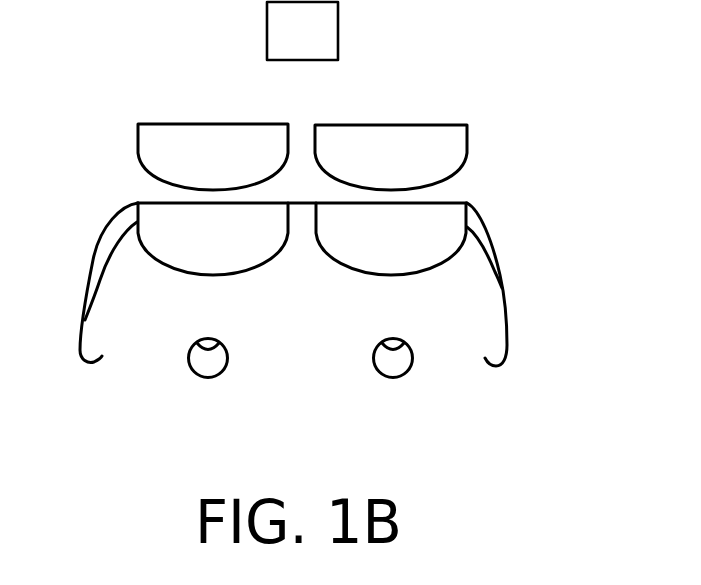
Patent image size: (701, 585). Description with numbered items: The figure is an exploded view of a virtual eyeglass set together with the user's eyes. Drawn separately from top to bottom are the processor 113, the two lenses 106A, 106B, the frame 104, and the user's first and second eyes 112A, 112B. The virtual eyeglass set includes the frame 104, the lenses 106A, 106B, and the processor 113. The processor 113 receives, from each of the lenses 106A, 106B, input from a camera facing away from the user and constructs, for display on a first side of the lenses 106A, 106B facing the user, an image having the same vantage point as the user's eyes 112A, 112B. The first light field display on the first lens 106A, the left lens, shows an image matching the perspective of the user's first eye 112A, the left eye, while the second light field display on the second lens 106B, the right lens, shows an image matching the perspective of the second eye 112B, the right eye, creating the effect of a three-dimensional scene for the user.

The processor 113 is at (338, 20).
The first lens 106A is at (137, 150).
The second lens 106B is at (467, 143).
The frame 104 is at (503, 283).
The first eye 112A is at (227, 365).
The second eye 112B is at (412, 365).